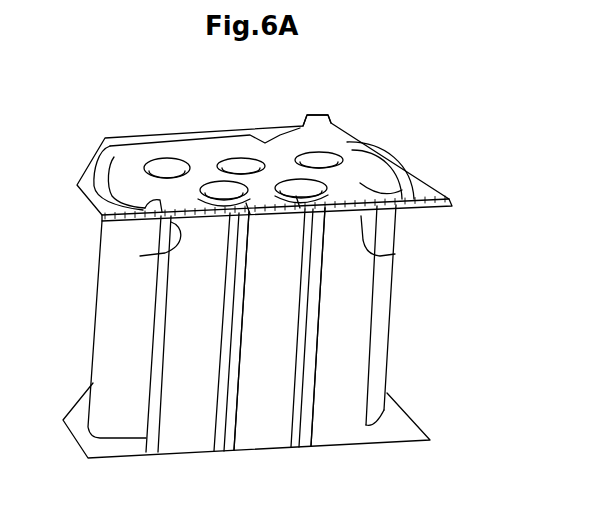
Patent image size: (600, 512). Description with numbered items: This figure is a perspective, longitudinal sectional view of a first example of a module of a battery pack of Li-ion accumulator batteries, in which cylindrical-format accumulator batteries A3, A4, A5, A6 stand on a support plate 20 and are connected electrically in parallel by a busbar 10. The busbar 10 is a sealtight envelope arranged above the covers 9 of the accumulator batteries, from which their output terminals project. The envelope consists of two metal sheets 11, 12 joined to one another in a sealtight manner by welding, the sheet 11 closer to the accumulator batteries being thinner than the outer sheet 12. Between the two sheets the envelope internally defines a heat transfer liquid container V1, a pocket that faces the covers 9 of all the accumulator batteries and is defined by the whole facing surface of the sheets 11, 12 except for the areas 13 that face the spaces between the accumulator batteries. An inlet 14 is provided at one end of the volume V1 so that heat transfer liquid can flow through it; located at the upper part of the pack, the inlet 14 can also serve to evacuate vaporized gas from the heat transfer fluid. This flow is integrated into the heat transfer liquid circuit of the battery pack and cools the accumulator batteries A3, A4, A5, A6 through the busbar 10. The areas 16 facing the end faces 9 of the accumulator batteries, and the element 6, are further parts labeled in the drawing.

The busbar 10 is at (495, 153).
The metal sheet 11 is at (452, 204).
The outer sheet 12 is at (423, 181).
The areas facing the spaces between the accumulator batteries 13 is at (243, 168).
The inlet 14 is at (322, 115).
The cover 9 is at (395, 254).
The areas facing the end faces of the accumulator batteries 16 is at (292, 212).
The separating wall 6 is at (152, 408).
The heat transfer liquid container V1 is at (160, 255).
The accumulator battery A3 is at (105, 340).
The accumulator battery A4 is at (186, 418).
The accumulator battery A5 is at (258, 418).
The accumulator battery A6 is at (337, 415).
The support plate 20 is at (78, 408).